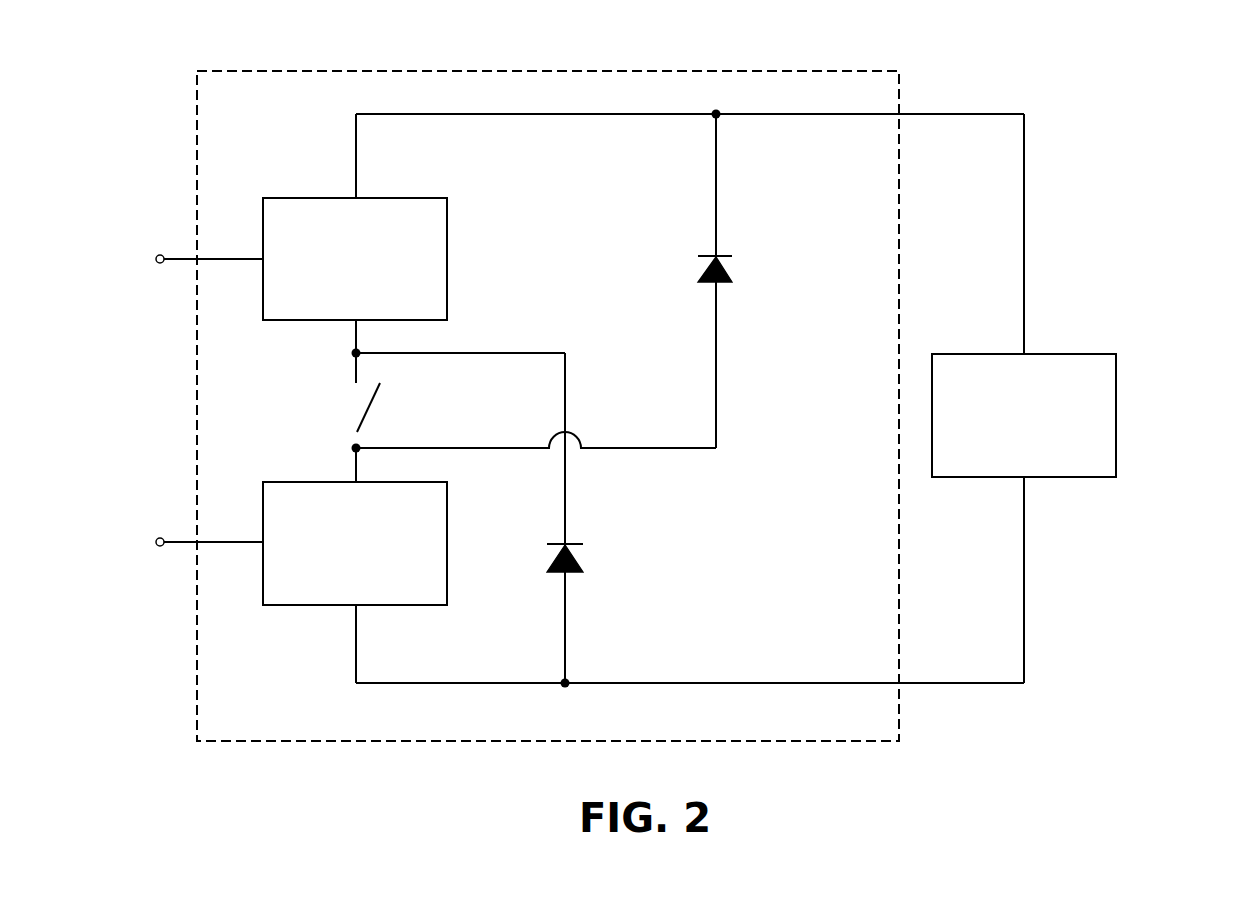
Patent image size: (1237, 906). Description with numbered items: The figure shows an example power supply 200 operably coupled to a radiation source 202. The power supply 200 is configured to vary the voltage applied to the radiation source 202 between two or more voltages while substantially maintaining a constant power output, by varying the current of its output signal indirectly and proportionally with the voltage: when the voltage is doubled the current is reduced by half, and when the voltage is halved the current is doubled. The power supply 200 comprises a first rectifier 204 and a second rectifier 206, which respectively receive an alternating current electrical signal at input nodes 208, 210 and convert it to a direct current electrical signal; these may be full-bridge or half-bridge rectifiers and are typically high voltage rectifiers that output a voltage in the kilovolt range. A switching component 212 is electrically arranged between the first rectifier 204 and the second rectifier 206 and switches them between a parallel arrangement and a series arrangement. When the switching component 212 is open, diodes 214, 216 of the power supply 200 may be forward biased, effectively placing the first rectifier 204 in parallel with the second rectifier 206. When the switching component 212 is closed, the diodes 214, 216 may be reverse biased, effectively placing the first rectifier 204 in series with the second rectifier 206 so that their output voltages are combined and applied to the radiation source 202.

The power supply 200 is at (197, 71).
The radiation source 202 is at (1116, 413).
The first rectifier 204 is at (297, 481).
The second rectifier 206 is at (313, 197).
The input node 208 is at (156, 539).
The input node 210 is at (156, 255).
The switching component 212 is at (326, 390).
The diode 214 is at (578, 562).
The diode 216 is at (726, 271).